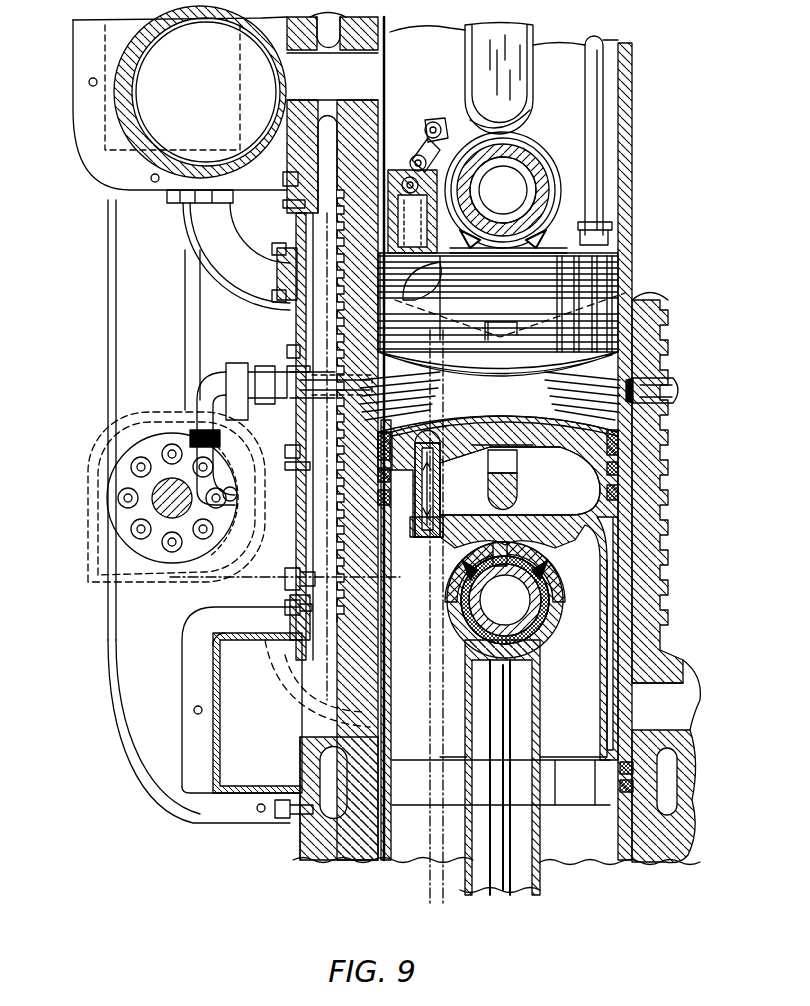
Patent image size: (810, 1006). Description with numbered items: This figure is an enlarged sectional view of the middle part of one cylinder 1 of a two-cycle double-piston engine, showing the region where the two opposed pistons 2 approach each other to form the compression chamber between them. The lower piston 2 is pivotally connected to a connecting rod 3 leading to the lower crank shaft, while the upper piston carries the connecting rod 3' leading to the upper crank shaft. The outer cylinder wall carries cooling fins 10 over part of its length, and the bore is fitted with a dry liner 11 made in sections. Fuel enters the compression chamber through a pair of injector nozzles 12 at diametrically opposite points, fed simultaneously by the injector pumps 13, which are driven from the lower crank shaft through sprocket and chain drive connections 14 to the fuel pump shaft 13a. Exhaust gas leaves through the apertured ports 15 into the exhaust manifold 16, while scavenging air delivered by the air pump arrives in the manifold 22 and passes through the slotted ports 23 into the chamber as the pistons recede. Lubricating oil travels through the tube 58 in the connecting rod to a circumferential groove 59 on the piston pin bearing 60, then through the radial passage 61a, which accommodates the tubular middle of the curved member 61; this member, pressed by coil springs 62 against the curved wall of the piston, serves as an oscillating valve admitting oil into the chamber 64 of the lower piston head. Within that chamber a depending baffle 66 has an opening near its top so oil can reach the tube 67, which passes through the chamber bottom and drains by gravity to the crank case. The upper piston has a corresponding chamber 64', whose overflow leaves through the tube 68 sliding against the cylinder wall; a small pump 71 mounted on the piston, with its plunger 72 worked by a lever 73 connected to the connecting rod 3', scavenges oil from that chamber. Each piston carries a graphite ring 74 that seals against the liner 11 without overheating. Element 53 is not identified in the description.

The cylinder 1 is at (433, 63).
The piston 2 is at (475, 375).
The connecting rod 3 is at (512, 718).
The connecting rod 3' is at (518, 79).
The fins 10 is at (337, 511).
The liner 11 is at (633, 209).
The injector nozzle 12 is at (293, 367).
The injector pump 13 is at (123, 513).
The fuel pump shaft 13a is at (172, 510).
The sprocket and chain drive connections 14 is at (283, 562).
The apertured port 15 is at (343, 80).
The manifold 16 is at (150, 66).
The manifold 22 is at (243, 767).
The slotted port 23 is at (667, 710).
The cavity 53 is at (523, 514).
The tube 58 is at (500, 887).
The circumferential groove 59 is at (545, 188).
The piston pin bearing 60 is at (532, 196).
The curved member 61 is at (555, 222).
The radial passage 61a is at (508, 234).
The coil spring 62 is at (515, 188).
The chamber 64 is at (498, 588).
The chamber 64' is at (501, 302).
The depending baffle 66 is at (490, 497).
The tube 67 is at (407, 530).
The tube 68 is at (593, 113).
The pump 71 is at (402, 167).
The plunger 72 is at (408, 158).
The lever 73 is at (433, 122).
The ring 74 is at (630, 448).